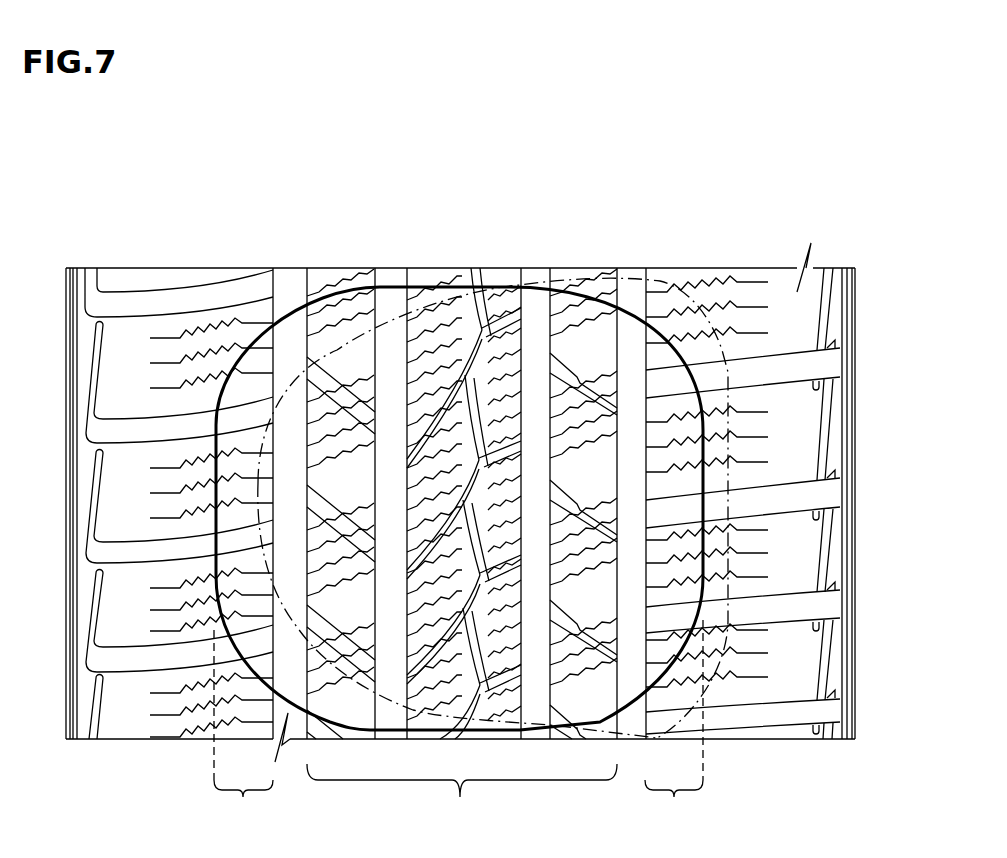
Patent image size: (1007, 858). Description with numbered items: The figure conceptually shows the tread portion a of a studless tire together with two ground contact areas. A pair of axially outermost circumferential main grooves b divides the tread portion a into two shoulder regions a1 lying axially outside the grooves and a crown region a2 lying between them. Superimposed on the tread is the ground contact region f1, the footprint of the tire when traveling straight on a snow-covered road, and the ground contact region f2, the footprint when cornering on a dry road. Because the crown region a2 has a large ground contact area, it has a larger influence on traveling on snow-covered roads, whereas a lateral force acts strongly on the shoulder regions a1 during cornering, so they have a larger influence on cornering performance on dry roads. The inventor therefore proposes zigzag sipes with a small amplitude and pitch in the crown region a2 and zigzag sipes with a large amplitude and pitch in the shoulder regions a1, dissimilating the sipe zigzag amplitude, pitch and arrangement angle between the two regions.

The tread portion a is at (735, 186).
The circumferential main groove b is at (290, 287).
The ground contact region when traveling straightly on a snow-covered road f1 is at (650, 325).
The ground contact region when cornering on a dry road f2 is at (728, 375).
The shoulder region a1 is at (458, 724).
The crown region a2 is at (462, 796).